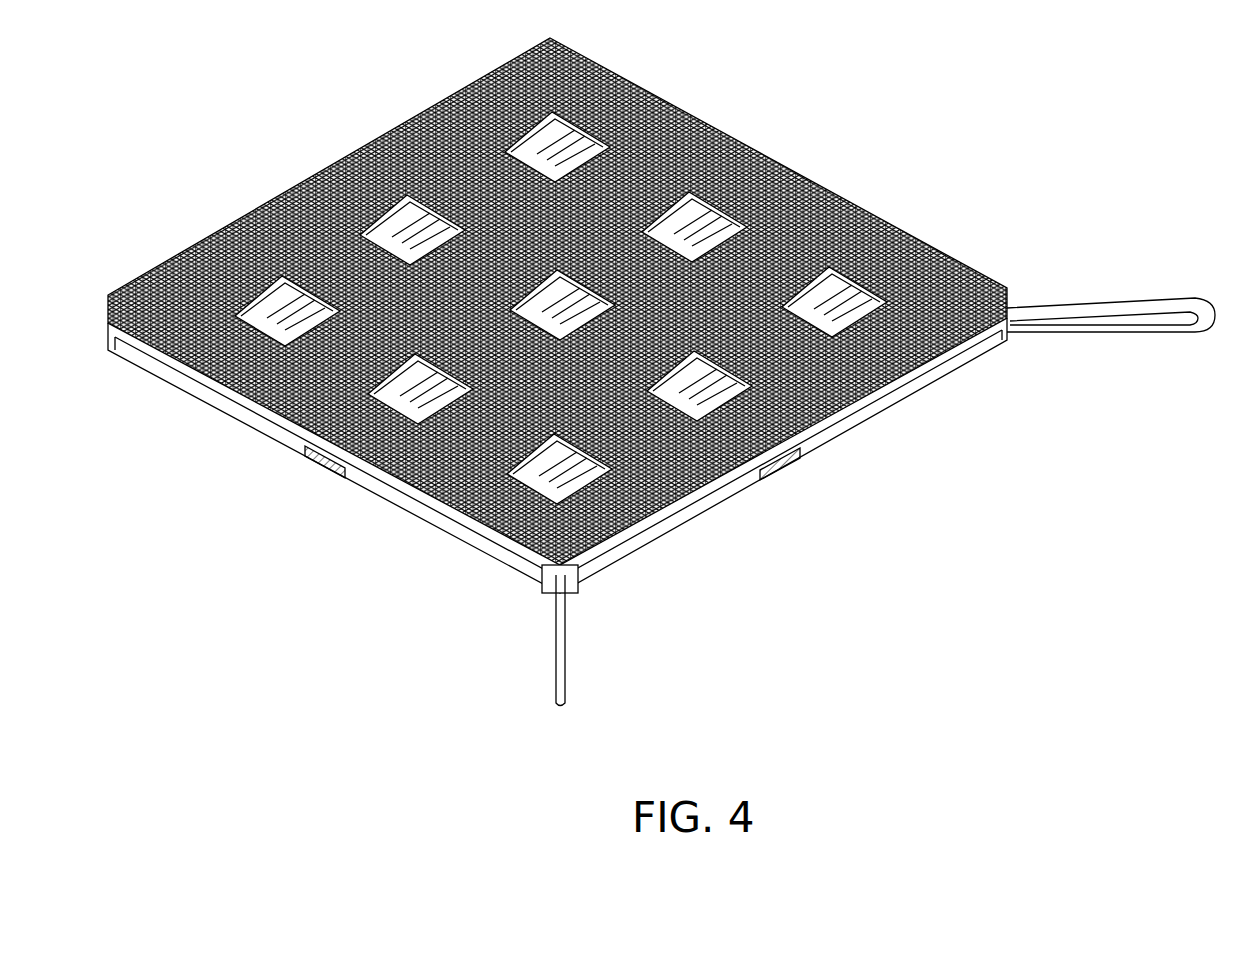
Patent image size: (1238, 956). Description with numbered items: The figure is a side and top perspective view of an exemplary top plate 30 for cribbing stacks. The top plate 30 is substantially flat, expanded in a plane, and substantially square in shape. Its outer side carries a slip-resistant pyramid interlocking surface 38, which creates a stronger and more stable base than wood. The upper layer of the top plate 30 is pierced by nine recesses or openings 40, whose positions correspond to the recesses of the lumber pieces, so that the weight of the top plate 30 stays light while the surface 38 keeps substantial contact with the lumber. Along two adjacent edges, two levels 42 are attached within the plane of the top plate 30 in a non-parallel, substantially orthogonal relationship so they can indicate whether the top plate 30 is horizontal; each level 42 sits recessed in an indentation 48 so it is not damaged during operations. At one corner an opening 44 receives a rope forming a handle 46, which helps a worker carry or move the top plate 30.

The top plate 30 is at (653, 378).
The pyramid interlocking surface 38 is at (212, 238).
The opening 40 is at (410, 215).
The level 42 is at (308, 452).
The opening 44 is at (588, 588).
The handle 46 is at (557, 686).
The indentation 48 is at (347, 472).